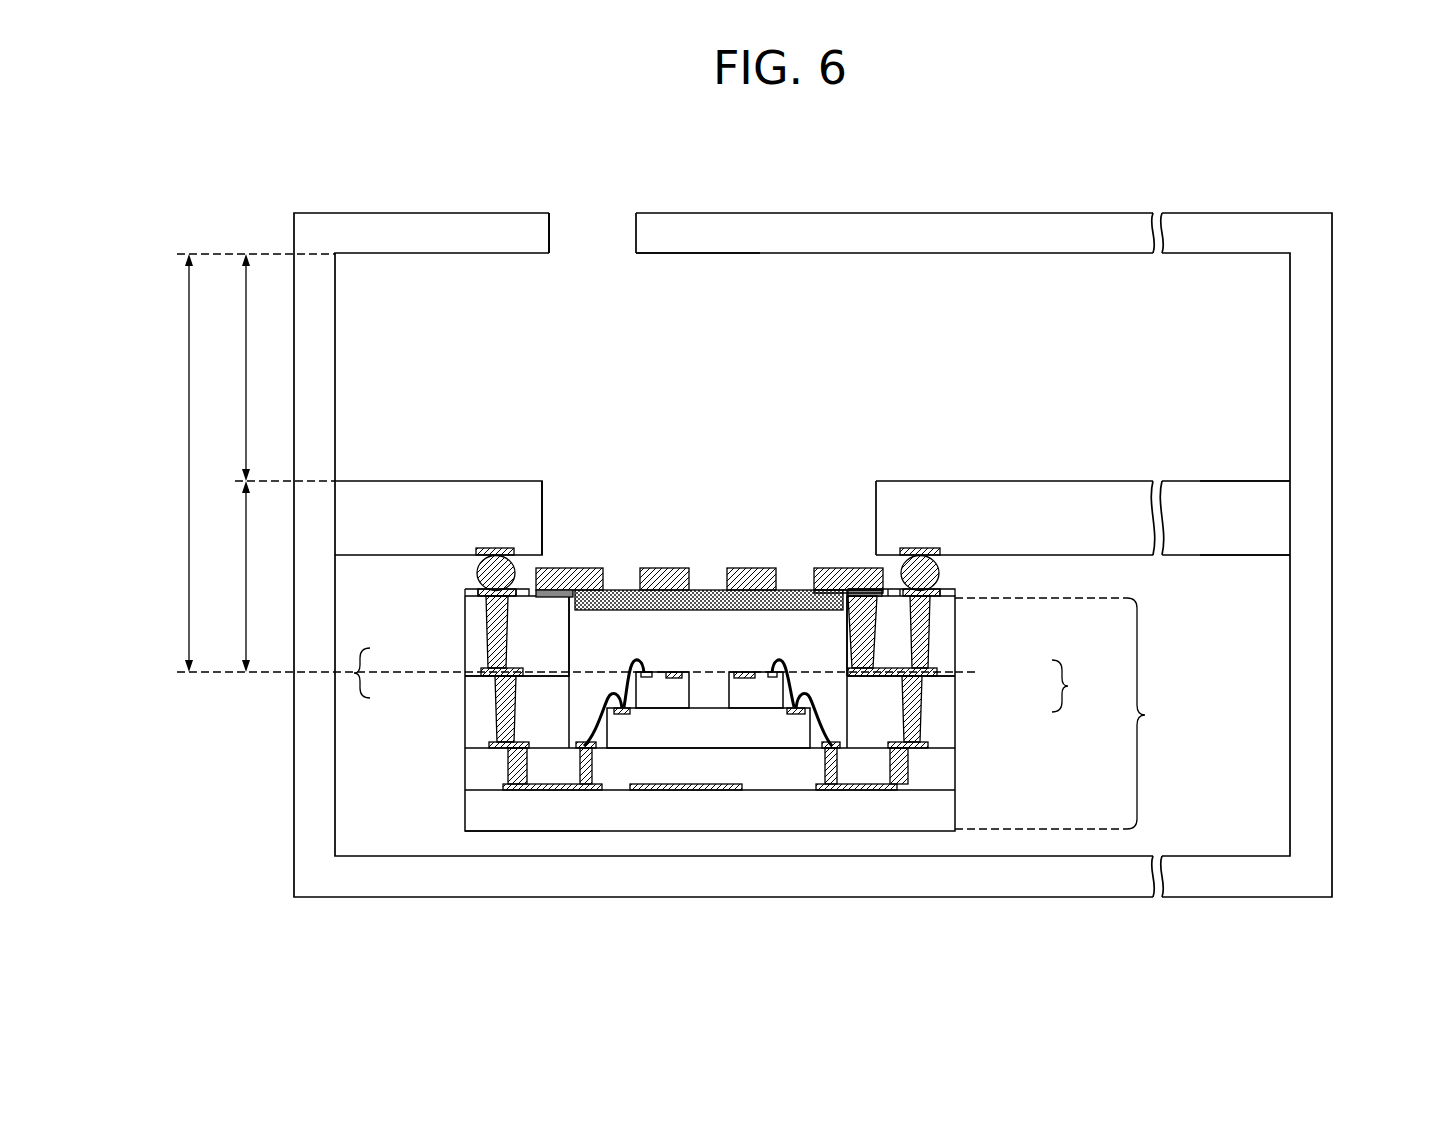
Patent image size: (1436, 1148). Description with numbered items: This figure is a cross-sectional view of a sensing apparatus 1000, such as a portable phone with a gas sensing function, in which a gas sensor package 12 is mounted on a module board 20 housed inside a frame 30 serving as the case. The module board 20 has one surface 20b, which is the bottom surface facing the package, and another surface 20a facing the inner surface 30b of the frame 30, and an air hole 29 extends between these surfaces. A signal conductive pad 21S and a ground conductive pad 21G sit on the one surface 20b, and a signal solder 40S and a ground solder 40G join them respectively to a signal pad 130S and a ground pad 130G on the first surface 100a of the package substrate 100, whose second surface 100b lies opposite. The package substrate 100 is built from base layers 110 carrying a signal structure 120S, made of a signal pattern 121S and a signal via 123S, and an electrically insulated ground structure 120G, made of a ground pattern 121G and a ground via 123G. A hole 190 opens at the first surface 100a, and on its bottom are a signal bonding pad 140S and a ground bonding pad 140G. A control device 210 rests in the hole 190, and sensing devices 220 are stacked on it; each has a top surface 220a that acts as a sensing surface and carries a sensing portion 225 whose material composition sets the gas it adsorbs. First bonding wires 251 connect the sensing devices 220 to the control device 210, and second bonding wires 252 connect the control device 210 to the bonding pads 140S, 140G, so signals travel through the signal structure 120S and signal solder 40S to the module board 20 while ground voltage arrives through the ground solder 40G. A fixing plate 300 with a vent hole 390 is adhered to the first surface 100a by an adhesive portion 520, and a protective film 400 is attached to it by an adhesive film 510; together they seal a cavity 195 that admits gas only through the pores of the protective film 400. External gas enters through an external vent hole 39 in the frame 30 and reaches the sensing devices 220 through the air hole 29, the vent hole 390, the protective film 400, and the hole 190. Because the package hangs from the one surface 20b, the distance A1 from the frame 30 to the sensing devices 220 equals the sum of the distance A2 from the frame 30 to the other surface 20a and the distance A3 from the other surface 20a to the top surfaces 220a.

The sensing apparatus 1000 is at (1297, 152).
The gas sensor package 12 is at (1255, 723).
The frame 30 is at (1316, 377).
The inner surface 30b is at (760, 266).
The external vent hole 39 is at (556, 232).
The module board 20 is at (1270, 517).
The other surface 20a is at (1268, 481).
The one surface 20b is at (1268, 555).
The air hole 29 is at (550, 497).
The signal conductive pad 21S is at (489, 548).
The ground conductive pad 21G is at (921, 548).
The signal solder 40S is at (477, 573).
The ground solder 40G is at (943, 572).
The package substrate 100 is at (827, 710).
The first surface 100a is at (472, 590).
The second surface 100b is at (478, 830).
The base layers 110 is at (945, 811).
The signal structure 120S is at (354, 673).
The ground structure 120G is at (987, 654).
The signal pattern 121S is at (482, 668).
The signal via 123S is at (498, 677).
The ground pattern 121G is at (943, 669).
The ground via 123G is at (943, 700).
The signal pad 130S is at (480, 597).
The ground pad 130G is at (955, 594).
The signal bonding pad 140S is at (566, 745).
The ground bonding pad 140G is at (838, 740).
The hole 190 is at (575, 707).
The cavity 195 is at (678, 638).
The control device 210 is at (790, 735).
The sensing device 220 is at (653, 693).
The top surface 220a is at (688, 665).
The sensing portion 225 is at (750, 677).
The first bonding wires 251 is at (500, 635).
The second bonding wires 252 is at (578, 745).
The fixing plate 300 is at (846, 574).
The vent hole 390 is at (608, 578).
The protective film 400 is at (740, 603).
The adhesive film 510 is at (816, 592).
The adhesive portion 520 is at (556, 590).
The distance between the frame and the sensing devices A1 is at (311, 463).
The distance between the frame and the other surface of the module board A2 is at (274, 367).
The distance between the other surface of the module board and the top surfaces of t A3 is at (232, 576).